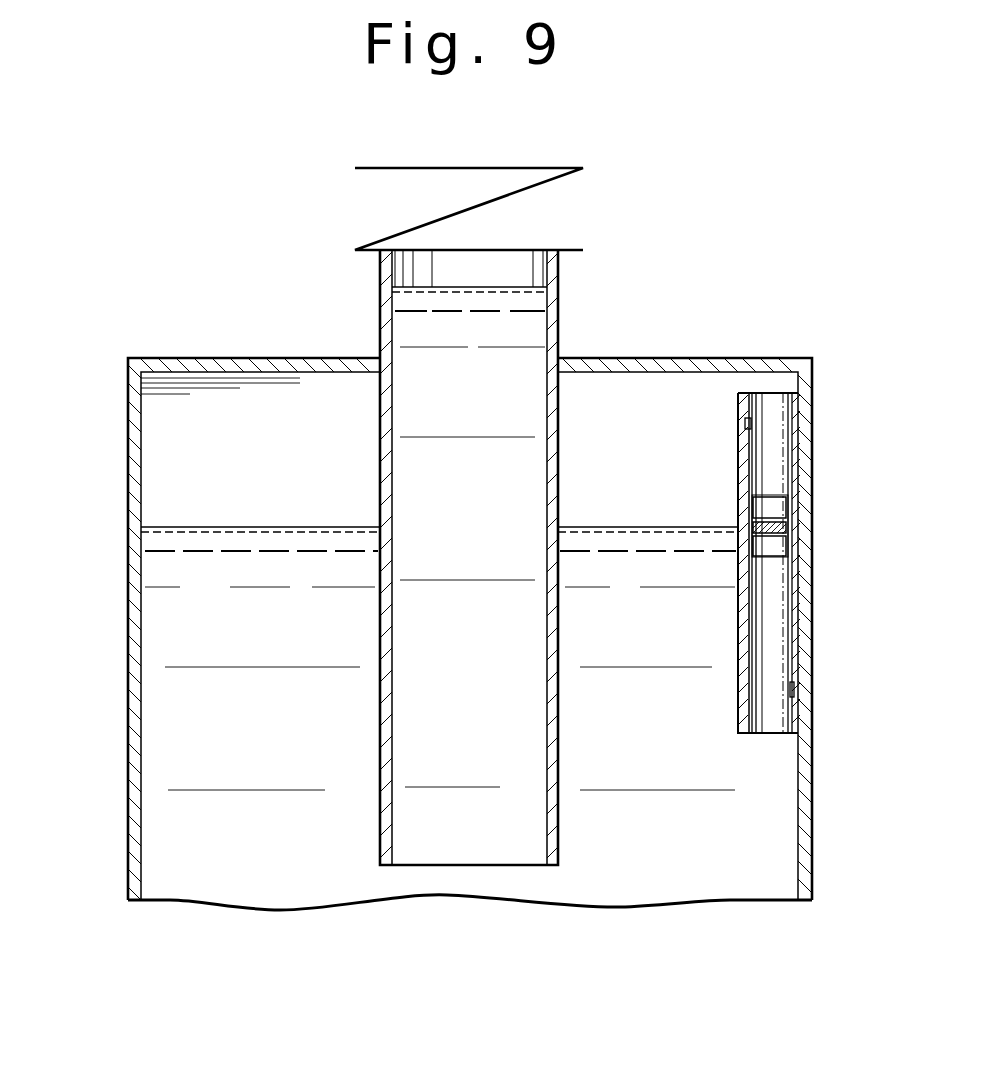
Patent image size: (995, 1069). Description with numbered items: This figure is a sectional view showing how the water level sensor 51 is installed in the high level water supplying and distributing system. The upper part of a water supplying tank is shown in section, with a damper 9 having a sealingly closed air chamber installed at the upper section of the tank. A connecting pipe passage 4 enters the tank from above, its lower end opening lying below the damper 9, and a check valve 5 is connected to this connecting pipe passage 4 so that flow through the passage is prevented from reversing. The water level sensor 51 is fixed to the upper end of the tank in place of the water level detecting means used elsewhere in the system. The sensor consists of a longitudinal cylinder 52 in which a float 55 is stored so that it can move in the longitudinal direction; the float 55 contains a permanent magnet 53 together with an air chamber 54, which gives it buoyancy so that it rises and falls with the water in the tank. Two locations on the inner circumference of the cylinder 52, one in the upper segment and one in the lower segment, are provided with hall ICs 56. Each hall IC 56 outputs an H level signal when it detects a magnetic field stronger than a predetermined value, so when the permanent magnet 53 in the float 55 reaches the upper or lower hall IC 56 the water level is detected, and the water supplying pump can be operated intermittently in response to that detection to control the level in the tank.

The connecting pipe passage 4 is at (387, 304).
The check valve 5 is at (535, 167).
The damper 9 is at (131, 455).
The water level sensor 51 is at (725, 458).
The longitudinal cylinder 52 is at (797, 417).
The permanent magnet 53 is at (778, 527).
The air chamber 54 is at (773, 505).
The float 55 is at (747, 515).
The hall IC 56 is at (745, 422).